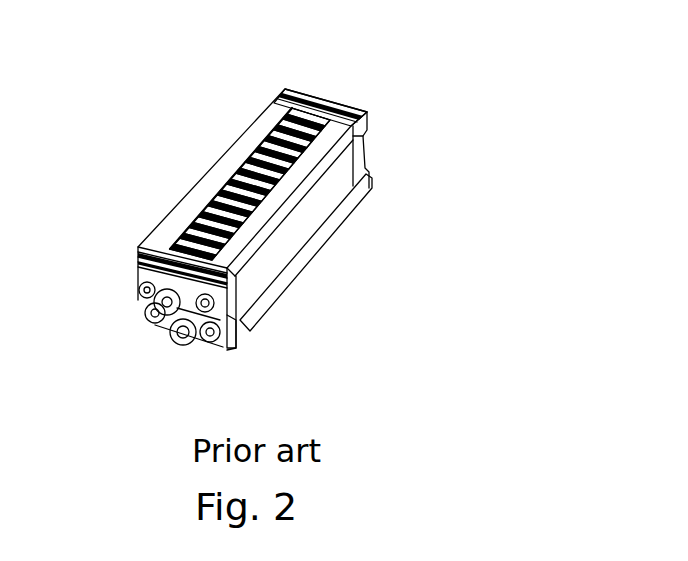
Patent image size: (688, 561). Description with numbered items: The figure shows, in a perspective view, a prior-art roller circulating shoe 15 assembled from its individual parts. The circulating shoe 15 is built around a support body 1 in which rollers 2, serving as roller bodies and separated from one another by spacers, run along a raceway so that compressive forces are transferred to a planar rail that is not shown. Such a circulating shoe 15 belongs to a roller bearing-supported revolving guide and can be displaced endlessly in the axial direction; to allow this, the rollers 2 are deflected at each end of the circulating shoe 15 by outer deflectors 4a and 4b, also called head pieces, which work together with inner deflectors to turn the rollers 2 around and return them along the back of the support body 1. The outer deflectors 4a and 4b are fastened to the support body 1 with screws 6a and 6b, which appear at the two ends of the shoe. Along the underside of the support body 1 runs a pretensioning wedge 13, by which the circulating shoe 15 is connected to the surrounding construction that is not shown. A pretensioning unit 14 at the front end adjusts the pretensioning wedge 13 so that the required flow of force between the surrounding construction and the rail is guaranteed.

The support body 1 is at (258, 137).
The rollers 2 is at (251, 161).
The outer deflector 4a is at (139, 246).
The outer deflector 4b is at (305, 93).
The screws 6a is at (138, 300).
The screws 6b is at (366, 140).
The pretensioning wedge 13 is at (321, 241).
The pretensioning unit 14 is at (228, 347).
The circulating shoe 15 is at (168, 188).